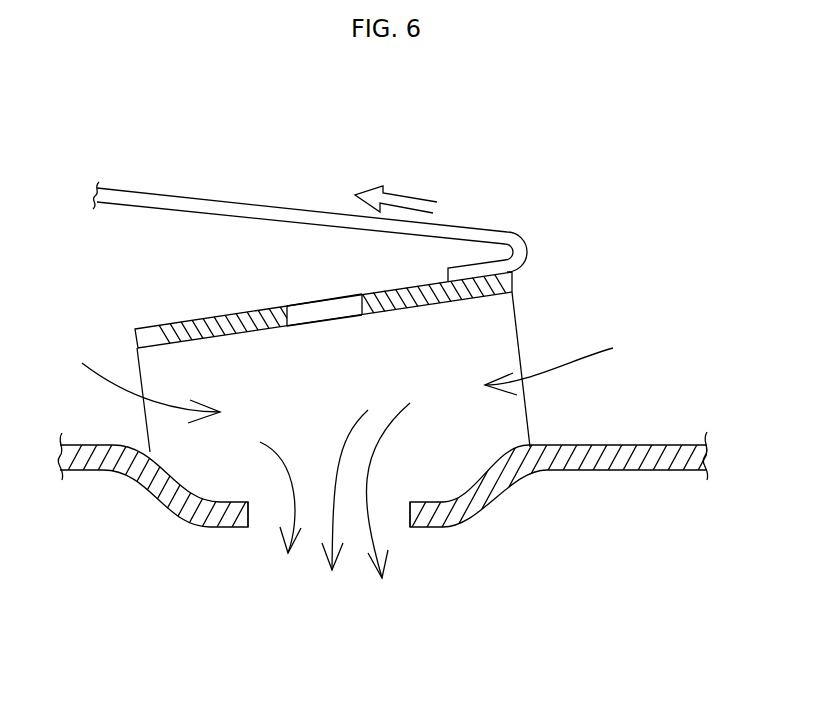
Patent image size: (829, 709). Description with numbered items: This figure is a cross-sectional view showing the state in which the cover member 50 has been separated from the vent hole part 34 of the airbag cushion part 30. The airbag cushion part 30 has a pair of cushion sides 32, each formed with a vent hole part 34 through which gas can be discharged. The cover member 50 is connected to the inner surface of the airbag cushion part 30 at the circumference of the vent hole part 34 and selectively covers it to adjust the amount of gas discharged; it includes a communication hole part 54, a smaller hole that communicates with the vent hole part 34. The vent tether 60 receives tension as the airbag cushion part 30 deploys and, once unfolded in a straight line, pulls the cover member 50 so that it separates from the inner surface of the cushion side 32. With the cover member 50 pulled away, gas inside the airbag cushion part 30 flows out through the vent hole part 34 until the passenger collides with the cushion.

The airbag cushion part 30 is at (601, 522).
The cushion side 32 is at (663, 445).
The vent hole part 34 is at (261, 534).
The cover member 50 is at (500, 330).
The communication hole part 54 is at (321, 288).
The vent tether 60 is at (188, 212).